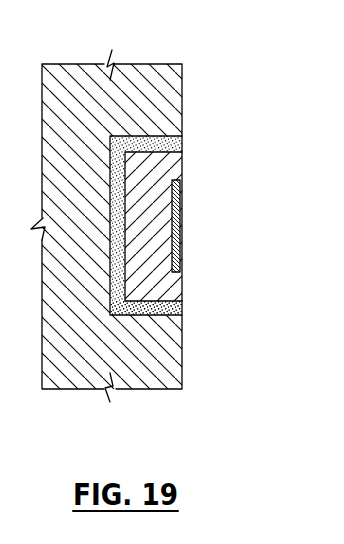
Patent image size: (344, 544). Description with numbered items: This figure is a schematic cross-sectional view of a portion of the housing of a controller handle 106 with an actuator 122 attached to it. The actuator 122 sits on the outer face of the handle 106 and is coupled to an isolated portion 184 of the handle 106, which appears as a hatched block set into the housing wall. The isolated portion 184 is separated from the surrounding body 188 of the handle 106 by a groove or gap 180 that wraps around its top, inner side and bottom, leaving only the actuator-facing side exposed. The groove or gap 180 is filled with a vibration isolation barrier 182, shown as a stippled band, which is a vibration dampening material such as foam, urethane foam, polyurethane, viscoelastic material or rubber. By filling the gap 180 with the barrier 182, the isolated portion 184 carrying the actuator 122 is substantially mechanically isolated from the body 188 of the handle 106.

The handle 106 is at (163, 91).
The groove or gap 180 is at (183, 143).
The vibration isolation barrier 182 is at (165, 308).
The isolated portion 184 is at (175, 170).
The actuator 122 is at (180, 218).
The body 188 is at (163, 370).